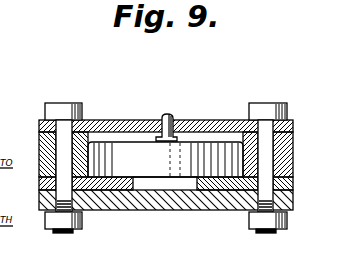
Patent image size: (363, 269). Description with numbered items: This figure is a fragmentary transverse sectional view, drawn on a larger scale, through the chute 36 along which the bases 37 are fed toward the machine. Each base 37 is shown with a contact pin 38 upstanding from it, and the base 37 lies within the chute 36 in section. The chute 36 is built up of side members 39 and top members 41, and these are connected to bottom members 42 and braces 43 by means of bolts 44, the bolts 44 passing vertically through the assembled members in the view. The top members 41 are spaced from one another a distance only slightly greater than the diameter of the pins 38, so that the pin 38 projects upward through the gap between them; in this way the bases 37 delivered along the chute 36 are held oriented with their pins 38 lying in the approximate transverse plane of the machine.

The chute 36 is at (168, 204).
The base 37 is at (138, 156).
The contact pin 38 is at (168, 116).
The side member 39 is at (38, 143).
The top member 41 is at (105, 120).
The bottom member 42 is at (110, 194).
The brace 43 is at (40, 207).
The bolt 44 is at (68, 103).